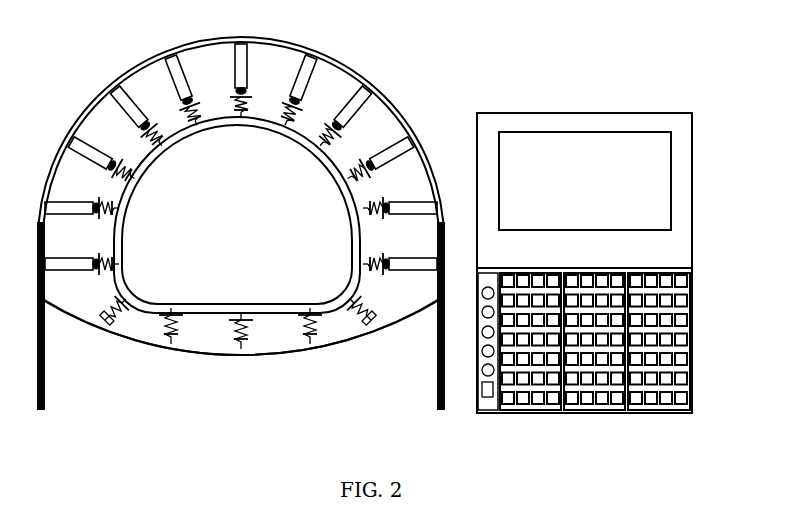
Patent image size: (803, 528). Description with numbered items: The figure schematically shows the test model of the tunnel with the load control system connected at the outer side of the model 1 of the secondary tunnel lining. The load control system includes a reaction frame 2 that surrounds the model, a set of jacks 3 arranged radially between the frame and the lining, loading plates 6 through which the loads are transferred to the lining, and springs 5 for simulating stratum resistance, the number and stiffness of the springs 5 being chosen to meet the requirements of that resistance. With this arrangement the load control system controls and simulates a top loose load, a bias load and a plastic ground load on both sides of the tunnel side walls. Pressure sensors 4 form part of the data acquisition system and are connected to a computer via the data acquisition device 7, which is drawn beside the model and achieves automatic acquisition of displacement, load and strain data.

The model of secondary tunnel lining 1 is at (200, 137).
The reaction frame 2 is at (112, 337).
The jack 3 is at (243, 72).
The pressure sensor 4 is at (145, 122).
The spring 5 is at (312, 316).
The loading plate 6 is at (300, 121).
The data acquisition device 7 is at (688, 185).